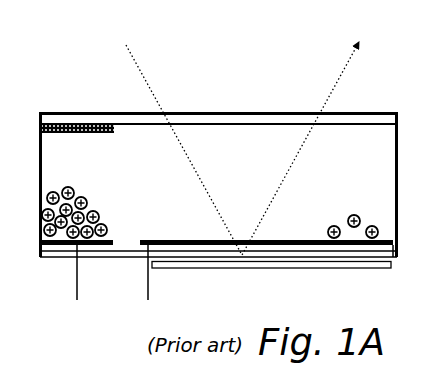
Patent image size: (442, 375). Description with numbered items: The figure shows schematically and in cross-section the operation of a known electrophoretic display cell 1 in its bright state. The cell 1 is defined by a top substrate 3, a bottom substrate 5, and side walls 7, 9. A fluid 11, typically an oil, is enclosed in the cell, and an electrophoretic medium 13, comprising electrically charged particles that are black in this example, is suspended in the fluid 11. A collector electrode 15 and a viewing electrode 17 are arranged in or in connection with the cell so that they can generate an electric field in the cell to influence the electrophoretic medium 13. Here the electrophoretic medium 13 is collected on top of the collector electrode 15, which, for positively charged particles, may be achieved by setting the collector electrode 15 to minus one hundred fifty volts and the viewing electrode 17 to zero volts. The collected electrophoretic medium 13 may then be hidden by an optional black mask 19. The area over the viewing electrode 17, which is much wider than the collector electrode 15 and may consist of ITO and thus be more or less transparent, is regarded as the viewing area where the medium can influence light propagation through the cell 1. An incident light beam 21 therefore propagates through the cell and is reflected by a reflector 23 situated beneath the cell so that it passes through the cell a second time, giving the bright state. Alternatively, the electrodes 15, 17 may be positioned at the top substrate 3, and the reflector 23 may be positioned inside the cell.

The electrophoretic display cell 1 is at (236, 186).
The top substrate 3 is at (61, 121).
The bottom substrate 5 is at (60, 252).
The side wall 7 is at (40, 165).
The side wall 9 is at (398, 236).
The fluid 11 is at (140, 184).
The electrophoretic medium 13 is at (47, 247).
The collector electrode 15 is at (78, 283).
The viewing electrode 17 is at (285, 247).
The black mask 19 is at (92, 122).
The incident light beam 21 is at (328, 95).
The reflector 23 is at (338, 266).